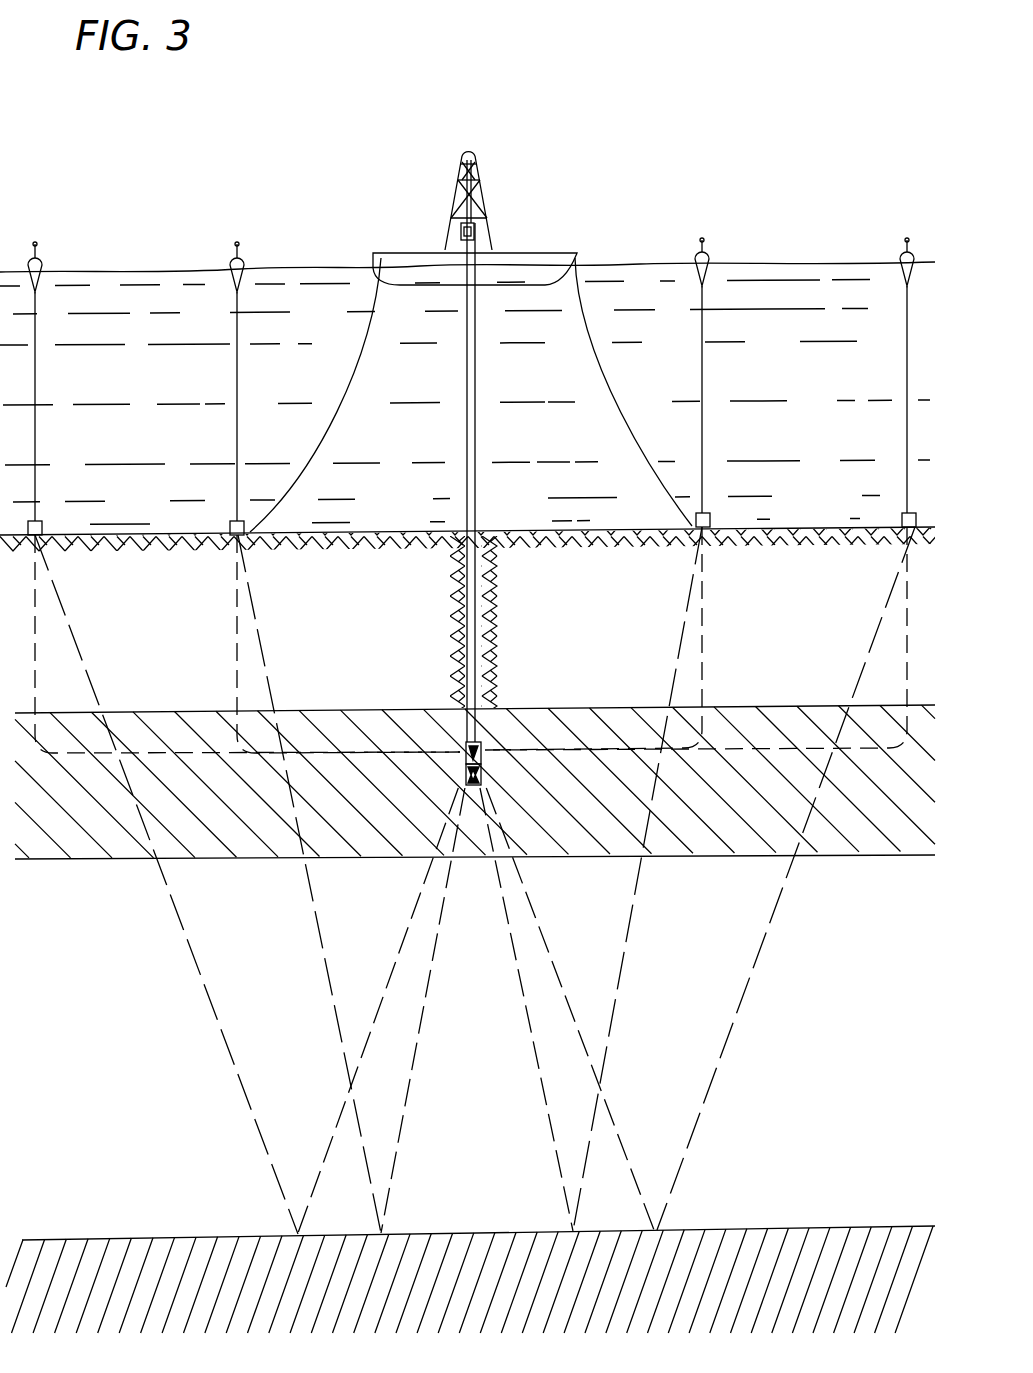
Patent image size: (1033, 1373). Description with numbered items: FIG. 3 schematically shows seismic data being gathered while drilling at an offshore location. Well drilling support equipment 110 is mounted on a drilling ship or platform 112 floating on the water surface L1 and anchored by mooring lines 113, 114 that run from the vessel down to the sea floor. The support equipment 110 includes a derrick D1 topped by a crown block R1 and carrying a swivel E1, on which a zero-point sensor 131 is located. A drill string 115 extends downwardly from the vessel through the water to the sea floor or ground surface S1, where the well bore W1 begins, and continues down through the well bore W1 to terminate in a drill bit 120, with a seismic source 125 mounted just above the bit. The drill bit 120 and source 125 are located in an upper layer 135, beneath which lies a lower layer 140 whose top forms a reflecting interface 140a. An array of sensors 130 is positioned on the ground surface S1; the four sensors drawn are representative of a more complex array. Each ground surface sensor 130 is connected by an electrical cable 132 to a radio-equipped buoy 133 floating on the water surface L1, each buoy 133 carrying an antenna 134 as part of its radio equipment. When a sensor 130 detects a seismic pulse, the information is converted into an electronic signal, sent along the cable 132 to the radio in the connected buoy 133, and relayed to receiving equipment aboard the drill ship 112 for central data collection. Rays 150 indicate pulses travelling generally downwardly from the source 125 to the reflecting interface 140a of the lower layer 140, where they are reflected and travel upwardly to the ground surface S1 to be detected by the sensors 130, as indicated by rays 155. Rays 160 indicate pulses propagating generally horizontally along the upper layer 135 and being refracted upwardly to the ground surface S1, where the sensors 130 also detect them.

The well drilling support equipment 110 is at (563, 170).
The drilling ship or platform 112 is at (545, 253).
The mooring line 113 is at (338, 406).
The mooring line 114 is at (607, 398).
The drill string 115 is at (468, 396).
The drill bit 120 is at (481, 783).
The seismic source 125 is at (481, 757).
The ground surface sensor 130 is at (230, 526).
The zero-point sensor 131 is at (461, 233).
The electrical cable 132 is at (237, 384).
The radio-equipped buoy 133 is at (231, 263).
The antenna 134 is at (237, 245).
The upper layer 135 is at (231, 811).
The lower layer 140 is at (102, 1287).
The reflecting interface 140a is at (136, 1239).
The rays 150 is at (526, 1025).
The rays 155 is at (338, 1026).
The rays 160 is at (237, 683).
The crown block R1 is at (470, 156).
The derrick D1 is at (456, 170).
The swivel E1 is at (475, 232).
The water surface L1 is at (338, 268).
The sea floor or ground surface S1 is at (410, 530).
The well bore W1 is at (479, 538).